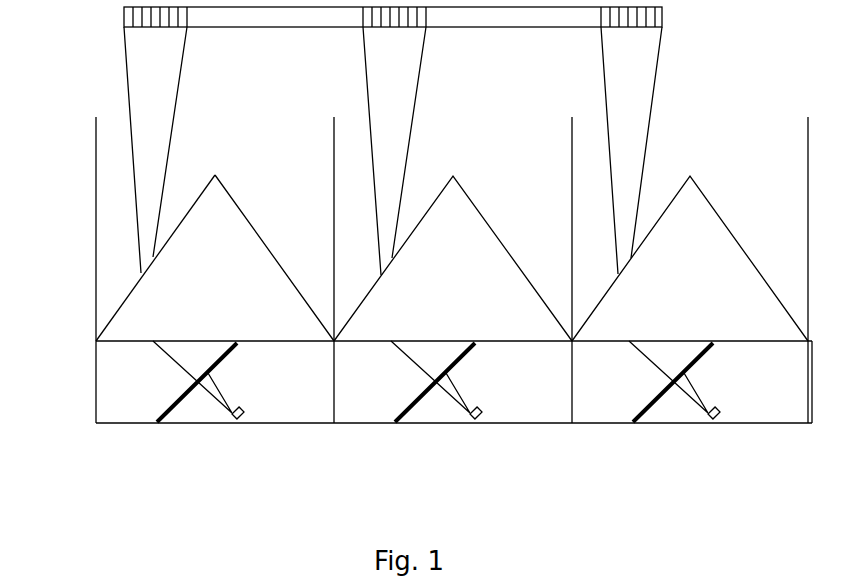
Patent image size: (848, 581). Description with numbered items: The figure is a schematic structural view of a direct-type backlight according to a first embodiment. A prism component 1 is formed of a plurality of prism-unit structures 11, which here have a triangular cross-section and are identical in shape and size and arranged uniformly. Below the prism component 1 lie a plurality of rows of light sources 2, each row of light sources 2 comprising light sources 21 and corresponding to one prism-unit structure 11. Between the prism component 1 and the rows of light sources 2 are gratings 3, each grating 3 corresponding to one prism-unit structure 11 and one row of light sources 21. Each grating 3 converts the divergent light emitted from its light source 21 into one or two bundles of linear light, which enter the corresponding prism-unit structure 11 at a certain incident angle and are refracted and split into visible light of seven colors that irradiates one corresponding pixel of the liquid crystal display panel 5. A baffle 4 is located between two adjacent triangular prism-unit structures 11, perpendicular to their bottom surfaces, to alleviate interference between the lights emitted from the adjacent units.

The prism component 1 is at (178, 297).
The prism-unit structure 11 is at (204, 243).
The row of light sources 2 is at (229, 422).
The light source 21 is at (245, 408).
The grating 3 is at (177, 398).
The baffle 4 is at (96, 201).
The liquid crystal display panel 5 is at (126, 19).